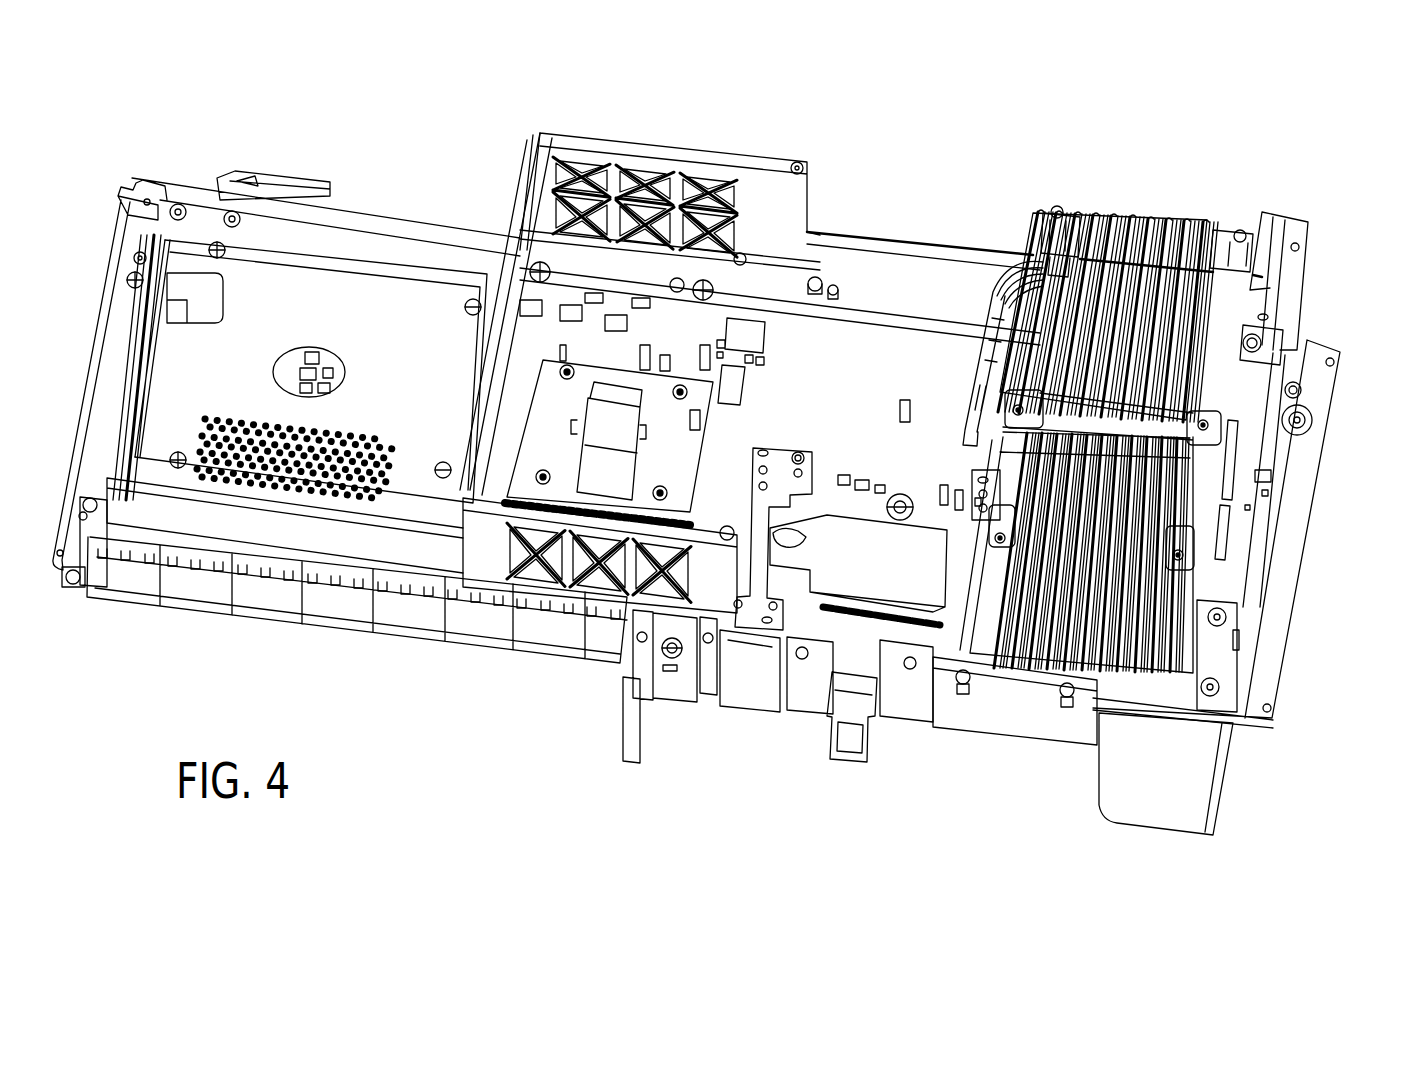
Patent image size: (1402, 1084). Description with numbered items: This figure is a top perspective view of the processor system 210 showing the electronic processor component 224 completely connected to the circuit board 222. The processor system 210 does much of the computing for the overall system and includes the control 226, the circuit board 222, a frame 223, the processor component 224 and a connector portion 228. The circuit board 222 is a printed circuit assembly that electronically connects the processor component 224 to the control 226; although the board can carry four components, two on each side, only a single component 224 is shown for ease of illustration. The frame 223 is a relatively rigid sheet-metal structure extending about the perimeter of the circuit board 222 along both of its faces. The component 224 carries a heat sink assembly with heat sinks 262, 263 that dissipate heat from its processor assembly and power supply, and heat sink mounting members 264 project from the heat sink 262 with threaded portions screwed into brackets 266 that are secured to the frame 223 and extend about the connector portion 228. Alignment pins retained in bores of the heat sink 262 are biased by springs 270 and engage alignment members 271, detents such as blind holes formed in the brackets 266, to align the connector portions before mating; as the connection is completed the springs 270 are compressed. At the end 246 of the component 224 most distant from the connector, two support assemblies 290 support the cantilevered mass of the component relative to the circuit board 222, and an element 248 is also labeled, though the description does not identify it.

The processor system 210 is at (692, 115).
The circuit board 222 is at (833, 345).
The frame 223 is at (888, 290).
The processor component 224 is at (1187, 215).
The control 226 is at (548, 362).
The connector portion 228 is at (930, 590).
The end 246 is at (1120, 399).
The front bracket 248 is at (1040, 705).
The heat sink 262 is at (1148, 215).
The heat sink 263 is at (1150, 573).
The heat sink mounting members 264 is at (1010, 410).
The brackets 266 is at (785, 460).
The springs 270 is at (960, 360).
The alignment members 271 is at (800, 452).
The support assemblies 290 is at (1280, 196).